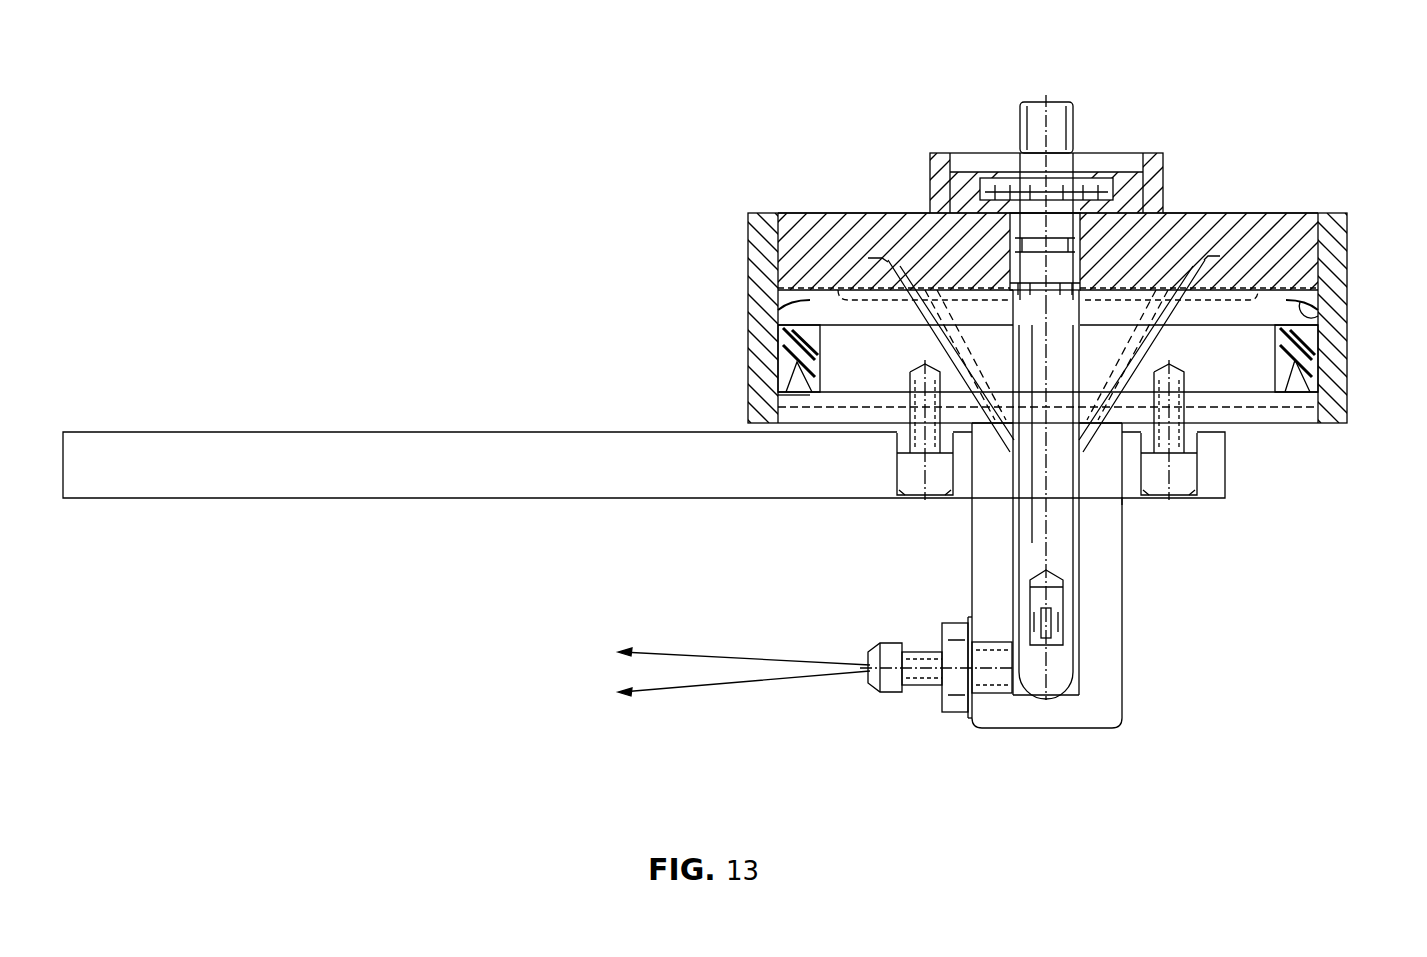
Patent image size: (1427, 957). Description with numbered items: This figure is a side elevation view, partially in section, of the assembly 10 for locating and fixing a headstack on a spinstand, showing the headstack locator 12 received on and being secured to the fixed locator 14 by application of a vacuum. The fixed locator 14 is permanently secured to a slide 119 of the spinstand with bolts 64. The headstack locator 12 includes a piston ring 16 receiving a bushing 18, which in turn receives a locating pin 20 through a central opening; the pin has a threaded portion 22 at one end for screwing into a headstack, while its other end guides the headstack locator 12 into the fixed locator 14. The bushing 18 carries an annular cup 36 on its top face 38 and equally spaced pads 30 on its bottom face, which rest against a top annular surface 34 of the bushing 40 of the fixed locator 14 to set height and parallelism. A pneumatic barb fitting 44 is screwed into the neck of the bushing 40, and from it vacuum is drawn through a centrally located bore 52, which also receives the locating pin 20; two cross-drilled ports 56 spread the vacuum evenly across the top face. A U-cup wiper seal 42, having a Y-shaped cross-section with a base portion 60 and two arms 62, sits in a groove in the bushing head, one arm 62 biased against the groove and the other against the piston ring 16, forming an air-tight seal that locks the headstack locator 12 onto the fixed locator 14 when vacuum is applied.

The assembly 10 is at (648, 142).
The headstack locator 12 is at (1238, 192).
The fixed locator 14 is at (1126, 572).
The piston ring 16 is at (748, 245).
The bushing 18 is at (801, 213).
The locating pin 20 is at (1022, 548).
The threaded portion 22 is at (1078, 124).
The pads 30 is at (778, 308).
The top annular surface 34 is at (778, 295).
The annular cup 36 is at (952, 160).
The top face 38 is at (862, 213).
The bushing 40 is at (1265, 430).
The wiper seal 42 is at (1322, 345).
The pneumatic barb fitting 44 is at (920, 688).
The central bore 52 is at (1086, 670).
The ports 56 is at (946, 325).
The base portion 60 is at (788, 352).
The arms 62 is at (795, 400).
The bolts 64 is at (915, 496).
The slide 119 is at (340, 432).